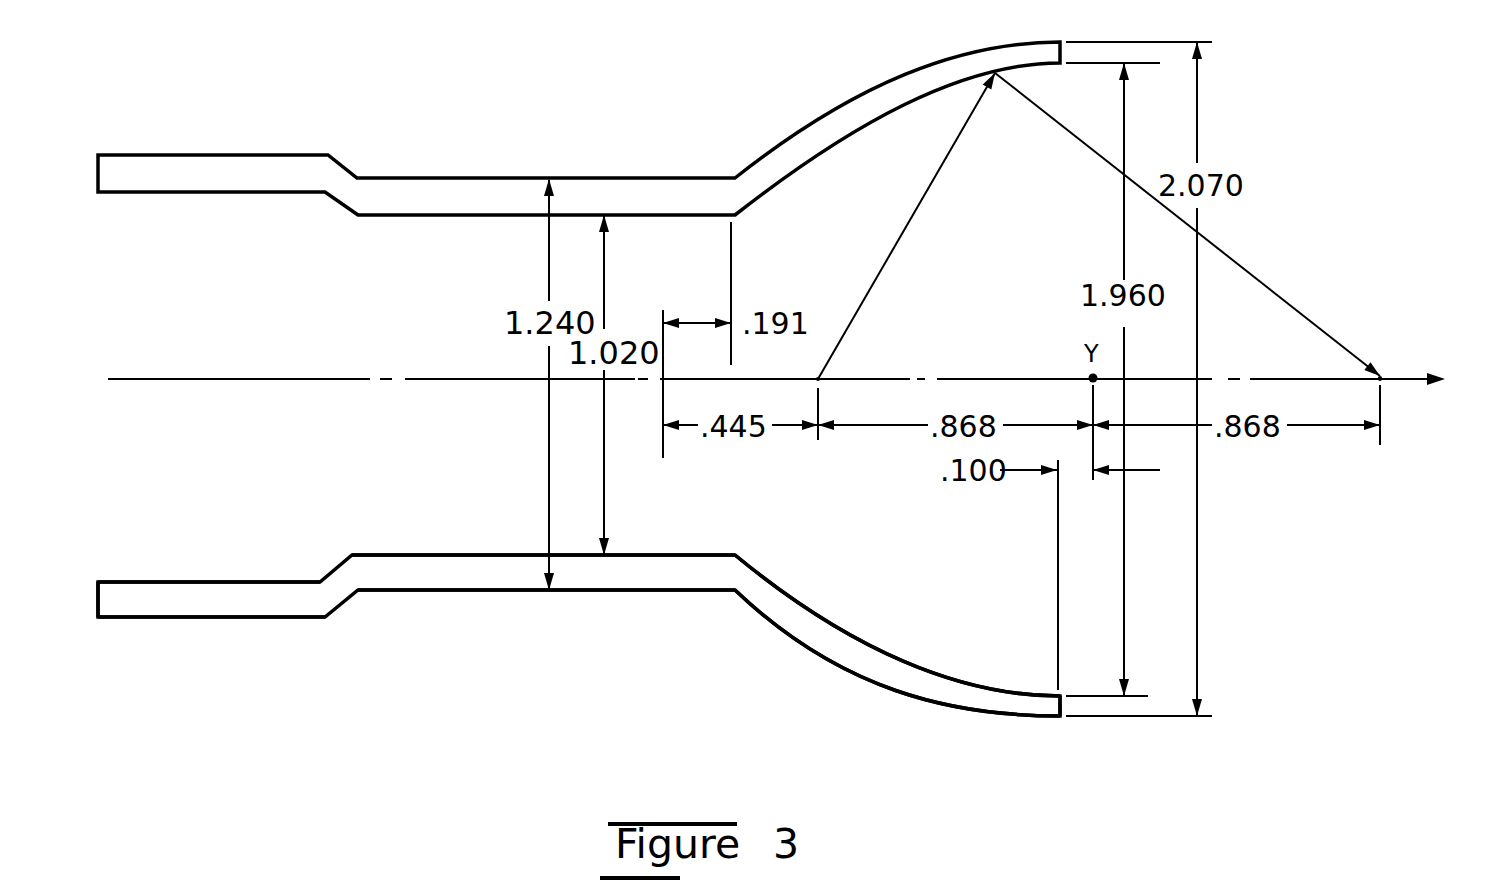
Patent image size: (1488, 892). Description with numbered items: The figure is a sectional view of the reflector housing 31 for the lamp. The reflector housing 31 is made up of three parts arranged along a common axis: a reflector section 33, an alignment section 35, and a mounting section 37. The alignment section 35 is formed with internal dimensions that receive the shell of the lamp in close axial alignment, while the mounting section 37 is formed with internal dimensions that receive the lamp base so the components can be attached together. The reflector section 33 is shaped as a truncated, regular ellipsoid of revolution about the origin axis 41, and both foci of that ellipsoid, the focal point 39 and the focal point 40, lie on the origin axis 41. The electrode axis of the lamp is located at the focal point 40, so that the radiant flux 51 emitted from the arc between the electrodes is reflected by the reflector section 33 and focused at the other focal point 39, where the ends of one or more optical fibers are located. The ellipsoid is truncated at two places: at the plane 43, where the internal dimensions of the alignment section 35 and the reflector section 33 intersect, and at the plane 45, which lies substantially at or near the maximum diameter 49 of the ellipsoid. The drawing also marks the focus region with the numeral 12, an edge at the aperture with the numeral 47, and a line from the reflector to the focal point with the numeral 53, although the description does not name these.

The focal point 12 is at (1398, 364).
The reflector housing 31 is at (597, 676).
The reflector section 33 is at (786, 620).
The alignment section 35 is at (480, 581).
The mounting section 37 is at (283, 607).
The focal point 39 is at (1381, 374).
The focal point 40 is at (818, 378).
The origin axis 41 is at (874, 378).
The plane 43 is at (731, 248).
The plane 45 is at (1058, 620).
The aperture edge 47 is at (1094, 700).
The maximum diameter 49 is at (1124, 630).
The radiant flux 51 is at (893, 250).
The focal distance line 53 is at (1272, 283).